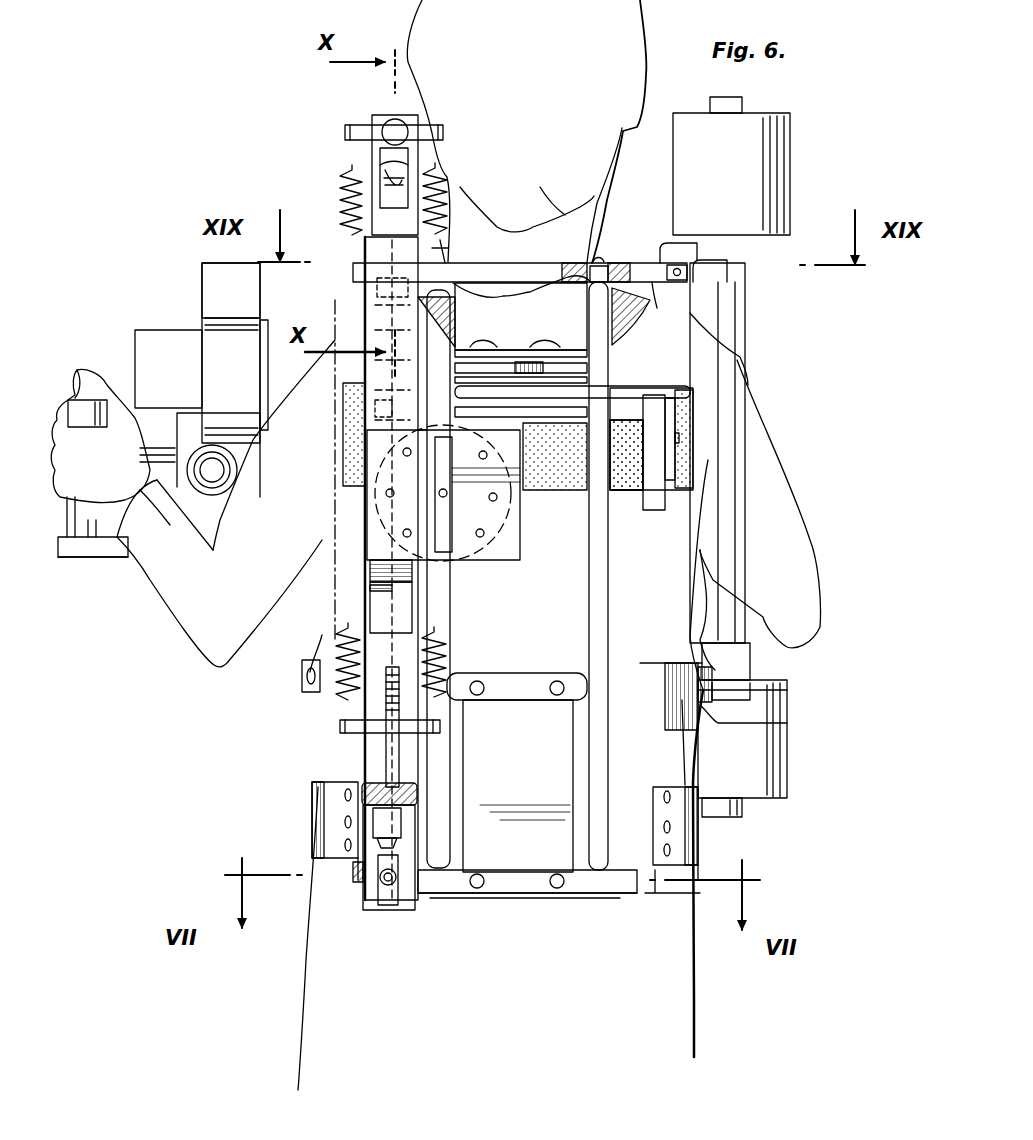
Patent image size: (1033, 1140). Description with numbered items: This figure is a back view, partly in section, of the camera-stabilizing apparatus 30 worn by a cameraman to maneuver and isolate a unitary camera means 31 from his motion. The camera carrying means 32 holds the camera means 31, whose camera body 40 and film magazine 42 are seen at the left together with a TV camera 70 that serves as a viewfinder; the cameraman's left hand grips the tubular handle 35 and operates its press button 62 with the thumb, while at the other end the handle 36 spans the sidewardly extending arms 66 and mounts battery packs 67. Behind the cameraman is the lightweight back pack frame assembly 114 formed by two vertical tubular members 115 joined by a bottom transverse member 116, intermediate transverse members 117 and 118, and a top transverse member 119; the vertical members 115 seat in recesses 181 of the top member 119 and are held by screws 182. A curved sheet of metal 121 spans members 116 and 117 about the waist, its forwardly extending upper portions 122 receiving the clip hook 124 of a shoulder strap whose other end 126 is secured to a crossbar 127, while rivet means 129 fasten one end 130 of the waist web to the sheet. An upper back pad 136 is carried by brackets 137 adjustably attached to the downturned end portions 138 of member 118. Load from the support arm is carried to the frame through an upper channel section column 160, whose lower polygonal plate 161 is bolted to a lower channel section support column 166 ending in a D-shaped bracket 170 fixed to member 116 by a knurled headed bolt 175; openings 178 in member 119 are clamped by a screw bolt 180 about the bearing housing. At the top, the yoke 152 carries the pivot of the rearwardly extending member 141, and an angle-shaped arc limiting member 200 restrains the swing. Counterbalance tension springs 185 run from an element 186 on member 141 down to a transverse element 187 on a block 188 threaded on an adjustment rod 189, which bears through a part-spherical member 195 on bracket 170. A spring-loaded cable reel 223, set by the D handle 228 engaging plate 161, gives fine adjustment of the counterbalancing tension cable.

The apparatus 30 is at (338, 150).
The unitary camera means 31 is at (196, 258).
The camera carrying means 32 is at (118, 562).
The handle 35 is at (90, 537).
The handle 36 is at (735, 325).
The camera body 40 is at (205, 508).
The magazine 42 is at (225, 280).
The press button 62 is at (87, 400).
The arms 66 is at (735, 235).
The battery packs 67 is at (768, 133).
The TV camera 70 is at (147, 345).
The back pack frame assembly 114 is at (628, 365).
The vertical tubular members 115 is at (590, 633).
The bottom transverse member 116 is at (540, 895).
The intermediate transverse member 117 is at (533, 692).
The intermediate transverse member 118 is at (555, 412).
The top transverse member 119 is at (520, 257).
The curved sheet of metal 121 is at (650, 727).
The upper portions 122 is at (300, 676).
The clip hook 124 is at (310, 650).
The other end 126 is at (492, 345).
The crossbar 127 is at (515, 368).
The rivet means 129 is at (345, 822).
The one end 130 is at (330, 858).
The upper back pad 136 is at (692, 395).
The brackets 137 is at (672, 420).
The downturned end portions 138 is at (660, 500).
The rearwardly extending member 141 is at (388, 128).
The yoke 152 is at (413, 200).
The channel section column 160 is at (380, 318).
The plate 161 is at (372, 530).
The lower channel section support column 166 is at (372, 582).
The D-shaped bracket 170 is at (400, 905).
The knurled headed bolt 175 is at (355, 885).
The openings 178 is at (655, 290).
The screw bolt 180 is at (678, 270).
The recesses 181 is at (606, 266).
The screws 182 is at (440, 243).
The counterbalance tension springs 185 is at (348, 206).
The element 186 is at (440, 125).
The transverse element 187 is at (343, 728).
The block 188 is at (385, 755).
The adjustment rod 189 is at (320, 795).
The part-spherical member 195 is at (390, 905).
The arc limiting member 200 is at (410, 176).
The cable reel 223 is at (452, 570).
The D handle 228 is at (497, 540).